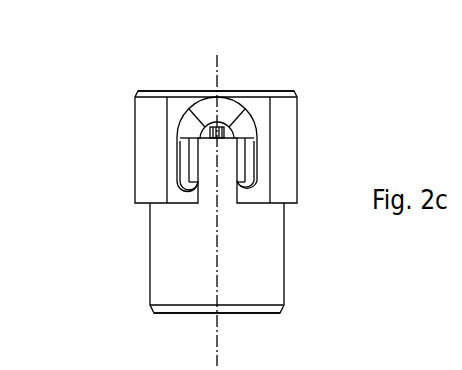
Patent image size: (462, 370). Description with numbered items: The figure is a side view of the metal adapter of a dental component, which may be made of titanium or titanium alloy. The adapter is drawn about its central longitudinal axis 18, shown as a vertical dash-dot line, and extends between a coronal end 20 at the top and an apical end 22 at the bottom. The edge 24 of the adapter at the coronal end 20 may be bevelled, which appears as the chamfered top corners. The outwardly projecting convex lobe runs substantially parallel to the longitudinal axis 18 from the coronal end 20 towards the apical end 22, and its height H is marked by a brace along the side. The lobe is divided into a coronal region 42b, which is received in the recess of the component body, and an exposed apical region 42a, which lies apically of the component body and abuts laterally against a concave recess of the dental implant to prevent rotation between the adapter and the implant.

The central longitudinal axis 18 is at (269, 212).
The coronal end 20 is at (215, 187).
The apical end 22 is at (256, 327).
The edge 24 is at (179, 73).
The exposed apical region 42a is at (125, 162).
The coronal region 42b is at (125, 90).
The height H is at (310, 88).